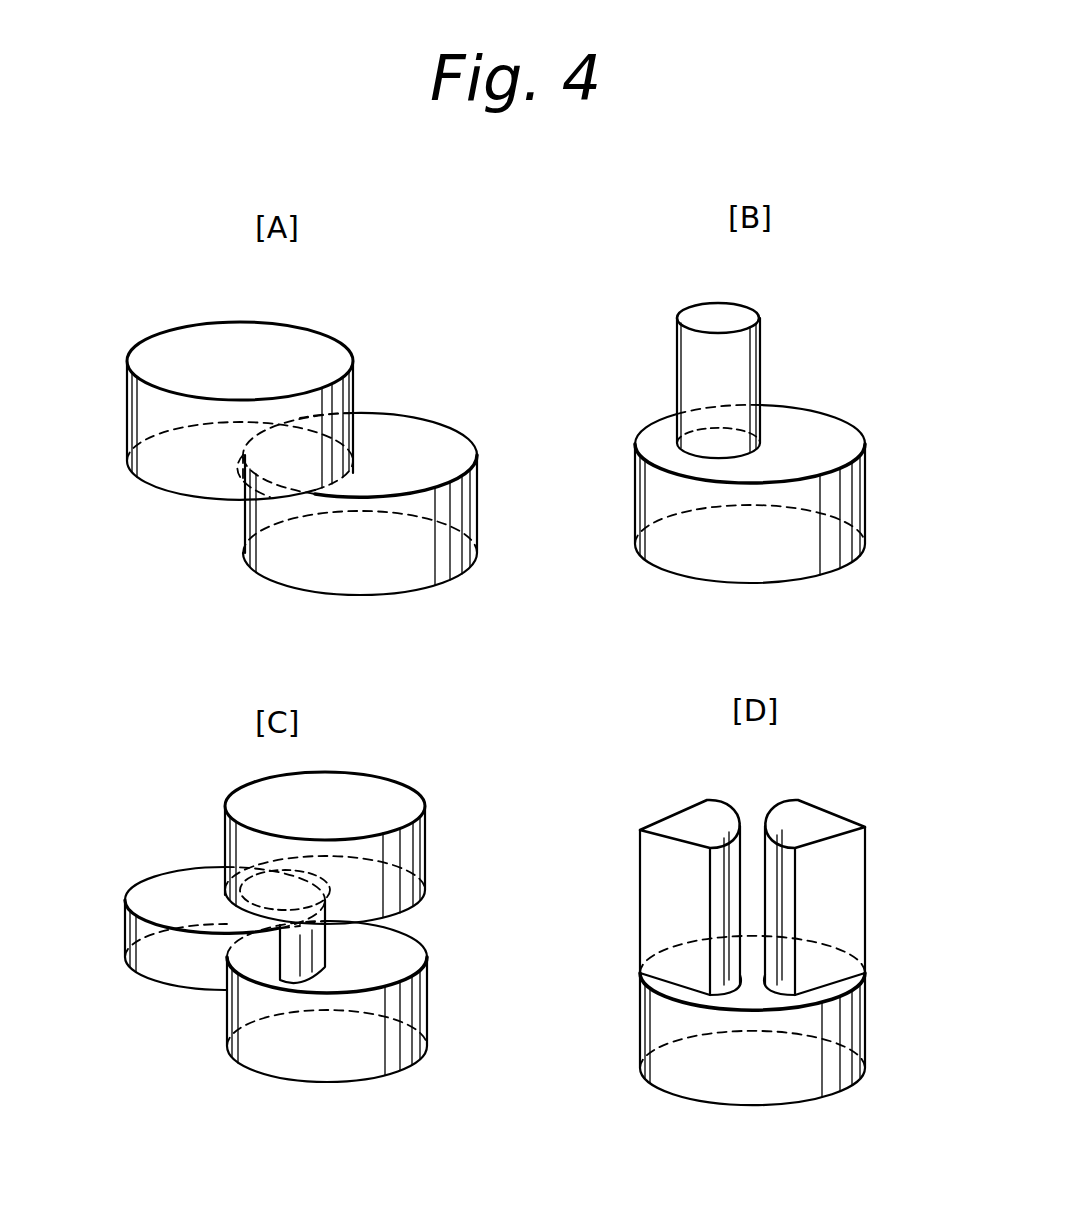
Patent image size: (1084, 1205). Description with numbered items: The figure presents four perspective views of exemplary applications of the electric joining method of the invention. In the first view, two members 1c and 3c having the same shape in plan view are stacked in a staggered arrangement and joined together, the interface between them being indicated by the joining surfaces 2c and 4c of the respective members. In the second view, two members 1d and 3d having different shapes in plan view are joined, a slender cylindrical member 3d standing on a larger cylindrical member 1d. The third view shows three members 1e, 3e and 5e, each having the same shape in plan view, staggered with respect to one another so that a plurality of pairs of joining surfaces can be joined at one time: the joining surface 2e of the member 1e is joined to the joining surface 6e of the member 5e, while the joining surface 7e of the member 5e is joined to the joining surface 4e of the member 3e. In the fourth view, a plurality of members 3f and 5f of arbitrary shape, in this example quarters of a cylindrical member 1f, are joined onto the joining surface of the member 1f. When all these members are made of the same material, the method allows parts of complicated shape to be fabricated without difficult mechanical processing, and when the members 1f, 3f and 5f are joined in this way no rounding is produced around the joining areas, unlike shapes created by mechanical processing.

The member 1c is at (243, 523).
The joining surface 2c is at (400, 423).
The member 3c is at (347, 397).
The joining surface 4c is at (243, 478).
The member 1d is at (833, 493).
The member 3d is at (737, 360).
The member 1e is at (412, 1005).
The joining surface 2e is at (262, 978).
The member 3e is at (402, 850).
The joining surface 4e is at (243, 908).
The member 5e is at (173, 962).
The joining surface 6e is at (420, 958).
The joining surface 7e is at (412, 893).
The cylindrical member 1f is at (750, 1075).
The member 3f is at (840, 905).
The member 5f is at (665, 908).